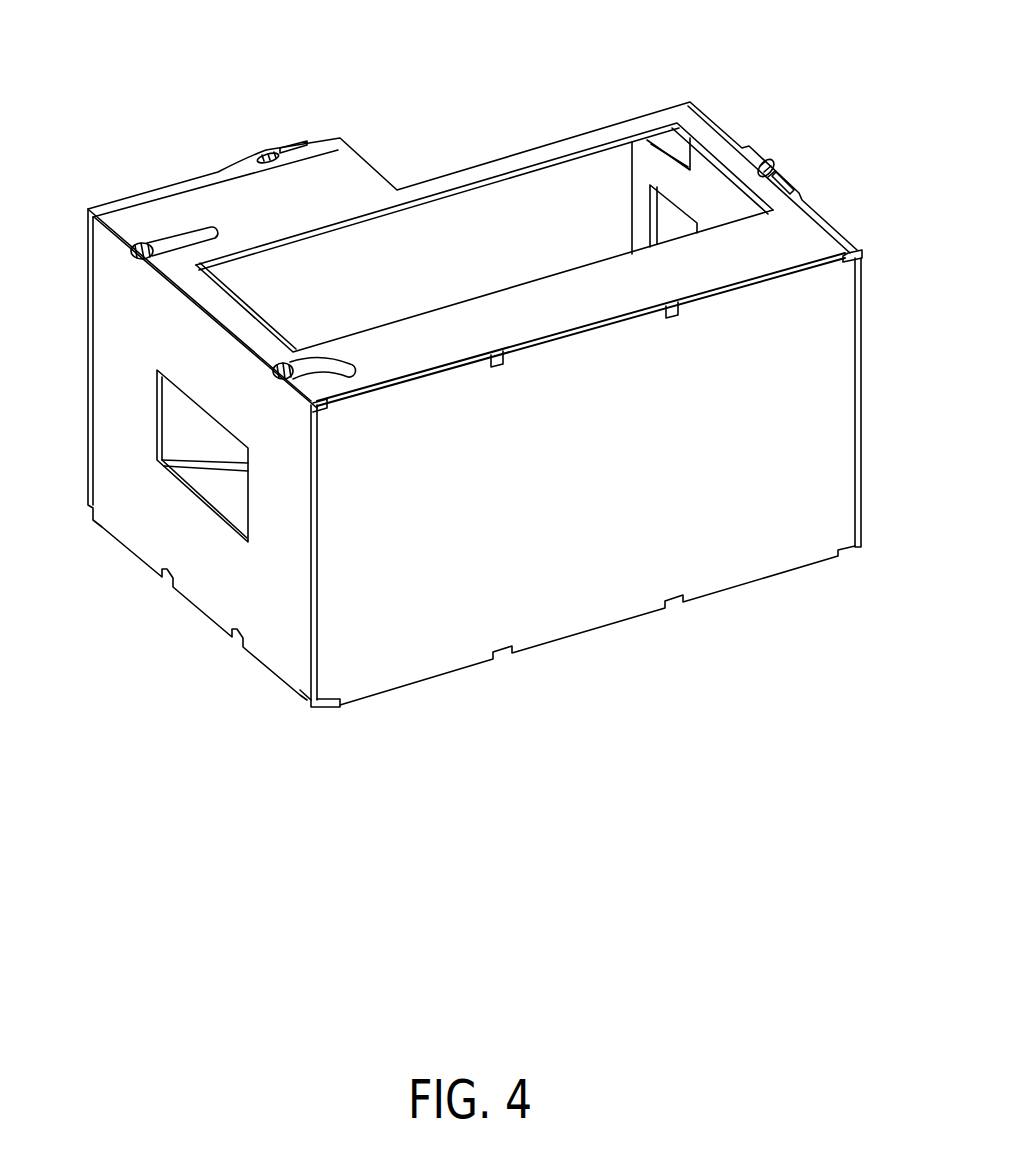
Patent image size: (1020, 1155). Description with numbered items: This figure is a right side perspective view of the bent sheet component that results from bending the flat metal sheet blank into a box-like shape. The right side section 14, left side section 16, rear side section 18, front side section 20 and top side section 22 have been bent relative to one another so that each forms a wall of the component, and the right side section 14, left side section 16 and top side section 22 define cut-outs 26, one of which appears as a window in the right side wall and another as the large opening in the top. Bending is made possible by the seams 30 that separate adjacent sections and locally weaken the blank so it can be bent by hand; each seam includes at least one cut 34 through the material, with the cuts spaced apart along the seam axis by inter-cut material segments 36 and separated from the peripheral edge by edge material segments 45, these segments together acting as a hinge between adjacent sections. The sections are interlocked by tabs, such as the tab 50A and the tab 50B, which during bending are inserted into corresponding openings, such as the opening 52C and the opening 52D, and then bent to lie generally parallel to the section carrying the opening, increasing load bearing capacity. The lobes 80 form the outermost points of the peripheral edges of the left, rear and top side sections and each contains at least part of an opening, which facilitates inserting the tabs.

The right side section 14 is at (270, 633).
The left side section 16 is at (644, 168).
The rear side section 18 is at (518, 207).
The front side section 20 is at (556, 595).
The top side section 22 is at (334, 188).
The cut-outs 26 is at (181, 486).
The seams 30 is at (817, 251).
The cut 34 is at (406, 378).
The inter-cut material segments 36 is at (497, 369).
The edge material segment 45 is at (862, 256).
The tab 50A is at (322, 358).
The tab 50B is at (170, 235).
The opening 52C is at (262, 150).
The opening 52D is at (786, 185).
The lobes 80 is at (283, 150).